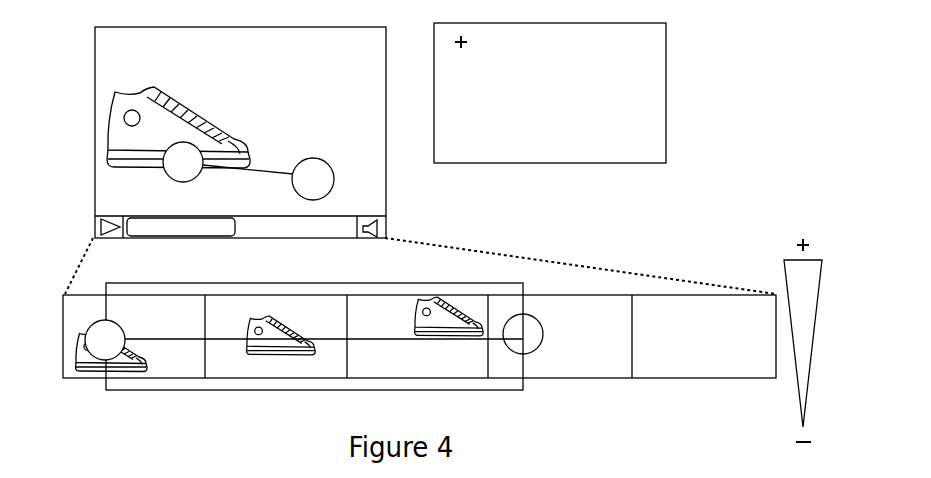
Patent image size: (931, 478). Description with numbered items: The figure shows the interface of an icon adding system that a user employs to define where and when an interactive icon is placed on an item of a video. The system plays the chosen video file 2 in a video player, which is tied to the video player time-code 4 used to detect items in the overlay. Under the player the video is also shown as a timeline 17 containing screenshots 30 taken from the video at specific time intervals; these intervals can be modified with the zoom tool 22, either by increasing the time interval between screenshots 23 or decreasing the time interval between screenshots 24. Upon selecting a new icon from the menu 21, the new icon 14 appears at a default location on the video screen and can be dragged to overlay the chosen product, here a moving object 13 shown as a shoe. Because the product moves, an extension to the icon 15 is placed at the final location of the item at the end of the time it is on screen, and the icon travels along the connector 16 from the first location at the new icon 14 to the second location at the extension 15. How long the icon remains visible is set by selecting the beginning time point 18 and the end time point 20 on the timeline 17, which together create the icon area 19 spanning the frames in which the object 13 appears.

The video file 2 is at (368, 75).
The video player time-code 4 is at (142, 225).
The moving object 13 is at (180, 115).
The new icon 14 is at (180, 162).
The extension to the icon 15 is at (315, 178).
The connector 16 is at (257, 177).
The timeline 17 is at (72, 367).
The beginning time point 18 is at (123, 332).
The icon area 19 is at (328, 380).
The end time point 20 is at (533, 333).
The menu 21 is at (648, 68).
The zoom tool 22 is at (807, 277).
The increasing the time interval between screenshots 23 is at (802, 240).
The decreasing the time interval between screenshots 24 is at (796, 442).
The screenshots 30 is at (603, 295).